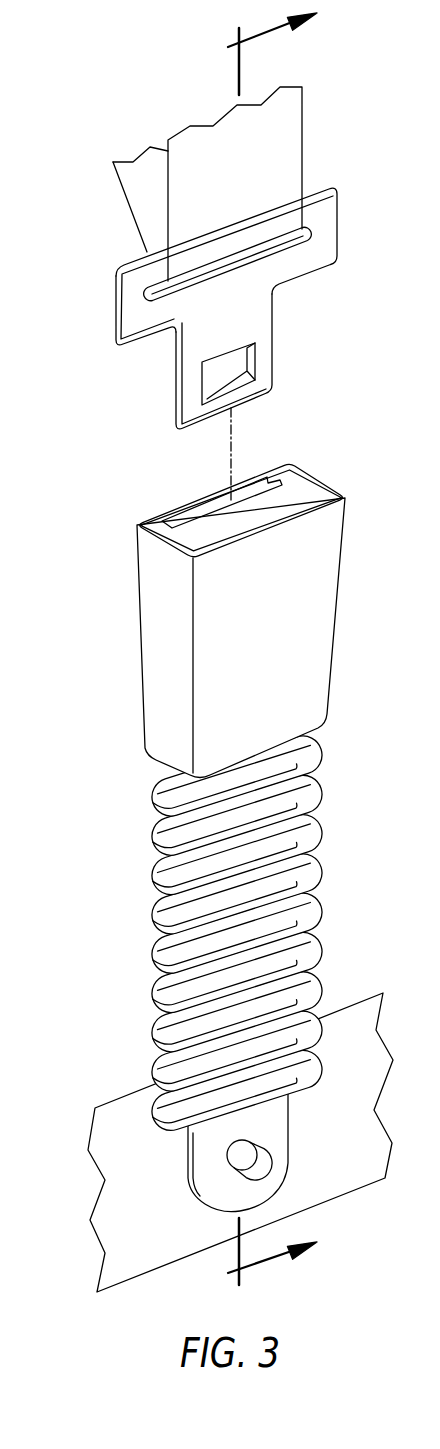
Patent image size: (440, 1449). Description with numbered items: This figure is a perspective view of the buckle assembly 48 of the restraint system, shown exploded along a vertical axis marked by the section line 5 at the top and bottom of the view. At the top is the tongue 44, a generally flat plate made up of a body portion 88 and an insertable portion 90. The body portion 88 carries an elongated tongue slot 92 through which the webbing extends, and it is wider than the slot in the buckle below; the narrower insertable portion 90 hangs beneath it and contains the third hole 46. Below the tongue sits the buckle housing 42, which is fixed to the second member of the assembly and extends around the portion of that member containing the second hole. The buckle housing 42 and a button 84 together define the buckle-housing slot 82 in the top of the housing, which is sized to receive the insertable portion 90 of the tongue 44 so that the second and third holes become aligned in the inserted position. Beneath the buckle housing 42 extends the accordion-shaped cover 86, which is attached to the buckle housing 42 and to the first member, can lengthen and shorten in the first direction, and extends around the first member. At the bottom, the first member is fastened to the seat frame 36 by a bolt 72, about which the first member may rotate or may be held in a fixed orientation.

The section line 5- 5 is at (283, 642).
The seat frame 36 is at (355, 1190).
The buckle housing 42 is at (263, 610).
The tongue 44 is at (219, 308).
The third hole 46 is at (258, 365).
The buckle assembly 48 is at (228, 786).
The bolt 72 is at (235, 1178).
The buckle-housing slot 82 is at (177, 510).
The button 84 is at (307, 486).
The cover 86 is at (153, 845).
The body portion 88 is at (114, 298).
The insertable portion 90 is at (173, 373).
The tongue slot 92 is at (310, 232).